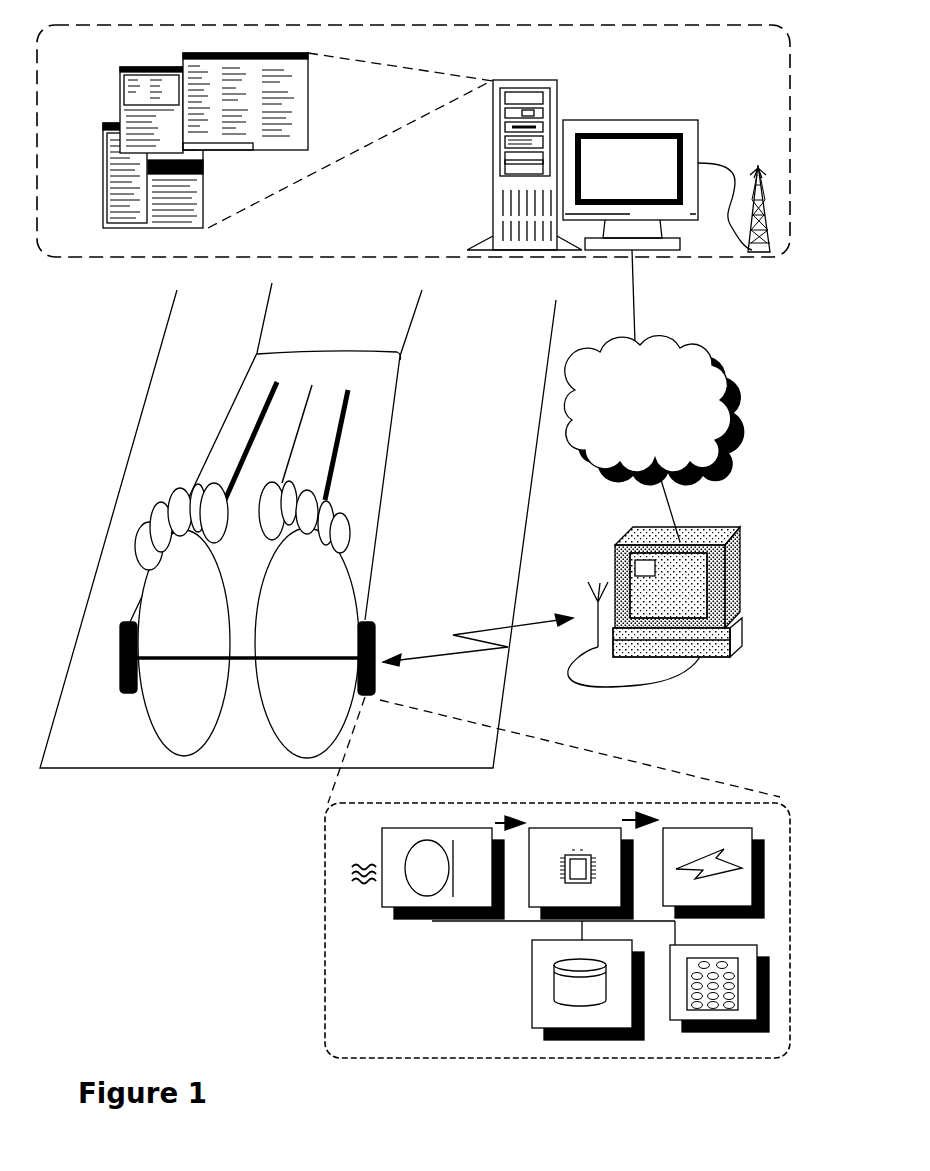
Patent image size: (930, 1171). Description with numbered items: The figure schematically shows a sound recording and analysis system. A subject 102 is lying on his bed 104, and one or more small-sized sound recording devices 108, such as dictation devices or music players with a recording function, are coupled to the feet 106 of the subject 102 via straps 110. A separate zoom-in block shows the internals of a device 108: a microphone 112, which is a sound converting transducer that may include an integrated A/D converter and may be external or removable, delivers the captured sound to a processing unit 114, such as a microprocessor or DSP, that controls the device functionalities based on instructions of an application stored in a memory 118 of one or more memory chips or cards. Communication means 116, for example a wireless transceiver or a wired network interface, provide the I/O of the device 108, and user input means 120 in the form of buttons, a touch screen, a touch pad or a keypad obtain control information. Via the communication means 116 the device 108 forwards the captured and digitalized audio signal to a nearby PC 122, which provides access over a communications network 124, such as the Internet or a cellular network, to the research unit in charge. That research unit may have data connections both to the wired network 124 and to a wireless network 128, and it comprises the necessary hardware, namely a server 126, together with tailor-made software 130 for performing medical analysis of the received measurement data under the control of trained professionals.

The subject 102 is at (258, 342).
The bed 104 is at (147, 362).
The feet 106 is at (153, 730).
The sound recording device 108 is at (358, 622).
The straps 110 is at (303, 657).
The microphone 112 is at (393, 910).
The processing unit 114 is at (520, 912).
The communication means 116 is at (767, 853).
The memory 118 is at (532, 997).
The user input means 120 is at (770, 967).
The PC 122 is at (615, 545).
The communications network 124 is at (613, 345).
The server 126 is at (630, 122).
The wireless network 128 is at (757, 165).
The tailor-made software 130 is at (250, 53).